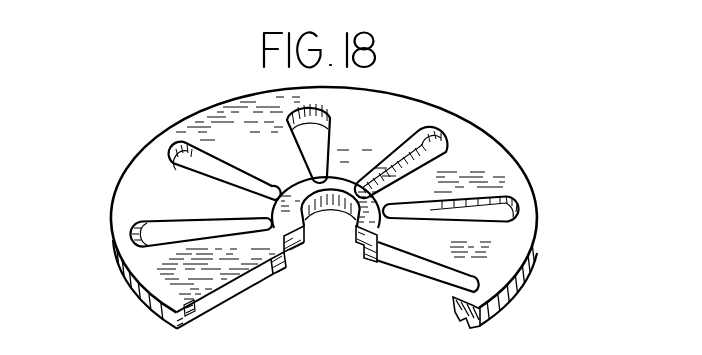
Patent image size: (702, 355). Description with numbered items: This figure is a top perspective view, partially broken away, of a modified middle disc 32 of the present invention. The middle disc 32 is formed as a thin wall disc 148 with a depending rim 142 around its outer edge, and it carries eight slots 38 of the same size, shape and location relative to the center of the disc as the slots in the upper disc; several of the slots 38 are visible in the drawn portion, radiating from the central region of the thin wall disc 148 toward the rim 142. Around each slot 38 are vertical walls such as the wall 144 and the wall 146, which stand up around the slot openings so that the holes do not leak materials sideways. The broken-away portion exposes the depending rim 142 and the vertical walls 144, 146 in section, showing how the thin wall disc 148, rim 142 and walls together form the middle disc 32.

The middle disc 32 is at (502, 124).
The slots 38 is at (434, 134).
The depending rim 142 is at (508, 308).
The vertical wall 144 is at (231, 293).
The vertical wall 146 is at (413, 262).
The thin wall disc 148 is at (258, 152).